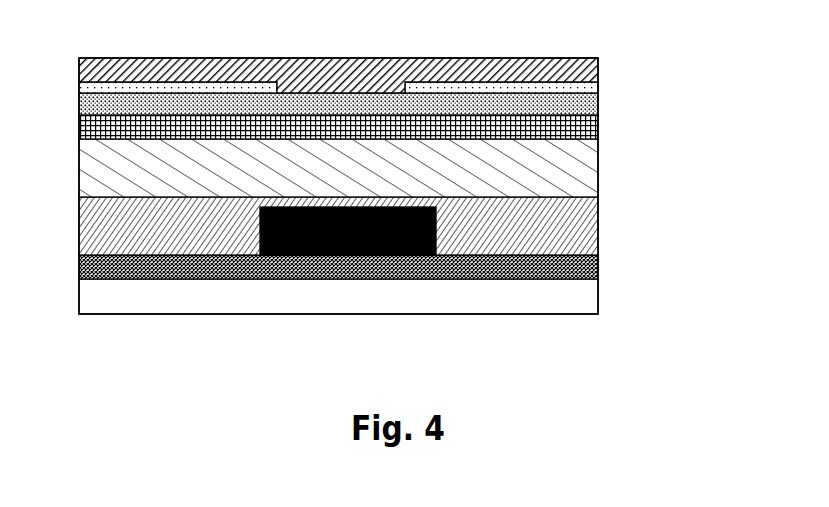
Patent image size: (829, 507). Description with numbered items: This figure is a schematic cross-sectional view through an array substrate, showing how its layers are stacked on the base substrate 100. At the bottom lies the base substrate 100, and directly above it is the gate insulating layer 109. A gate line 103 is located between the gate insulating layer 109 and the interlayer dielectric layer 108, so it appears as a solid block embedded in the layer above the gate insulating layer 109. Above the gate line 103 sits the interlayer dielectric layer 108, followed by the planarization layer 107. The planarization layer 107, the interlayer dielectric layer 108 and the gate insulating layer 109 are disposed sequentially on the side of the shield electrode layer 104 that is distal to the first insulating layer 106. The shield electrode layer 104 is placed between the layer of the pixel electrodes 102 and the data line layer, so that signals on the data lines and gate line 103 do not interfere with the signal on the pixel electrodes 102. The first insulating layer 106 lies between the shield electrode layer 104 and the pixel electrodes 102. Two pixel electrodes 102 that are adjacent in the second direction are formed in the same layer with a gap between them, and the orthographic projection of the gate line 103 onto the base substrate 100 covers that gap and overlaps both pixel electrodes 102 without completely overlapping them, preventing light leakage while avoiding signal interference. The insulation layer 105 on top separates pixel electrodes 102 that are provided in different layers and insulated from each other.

The base substrate 100 is at (598, 295).
The pixel electrode 102 is at (178, 82).
The gate line 103 is at (348, 279).
The shield electrode layer 104 is at (598, 127).
The insulation layer 105 is at (598, 70).
The first insulating layer 106 is at (598, 102).
The planarization layer 107 is at (598, 168).
The interlayer dielectric layer 108 is at (598, 227).
The gate insulating layer 109 is at (598, 267).